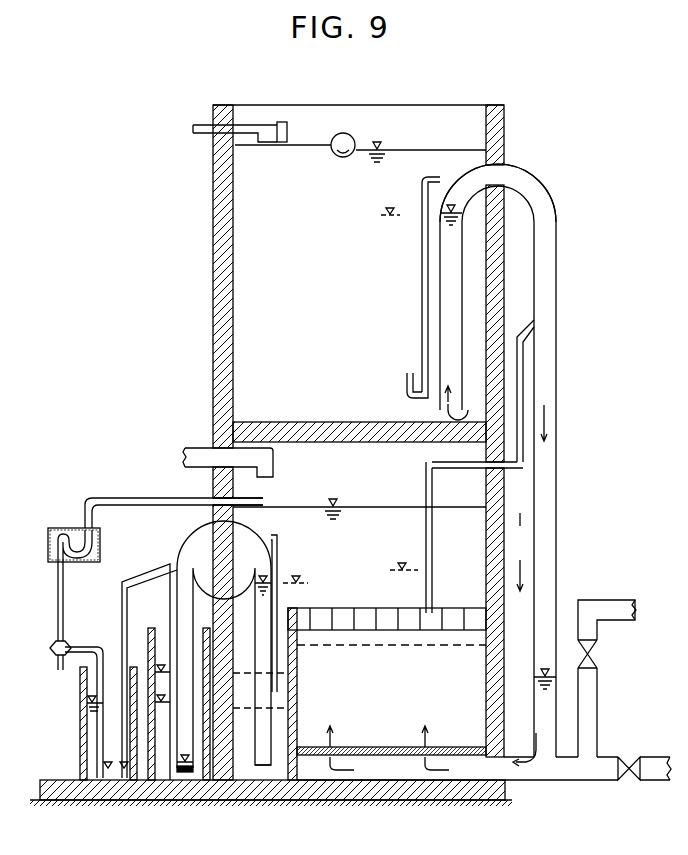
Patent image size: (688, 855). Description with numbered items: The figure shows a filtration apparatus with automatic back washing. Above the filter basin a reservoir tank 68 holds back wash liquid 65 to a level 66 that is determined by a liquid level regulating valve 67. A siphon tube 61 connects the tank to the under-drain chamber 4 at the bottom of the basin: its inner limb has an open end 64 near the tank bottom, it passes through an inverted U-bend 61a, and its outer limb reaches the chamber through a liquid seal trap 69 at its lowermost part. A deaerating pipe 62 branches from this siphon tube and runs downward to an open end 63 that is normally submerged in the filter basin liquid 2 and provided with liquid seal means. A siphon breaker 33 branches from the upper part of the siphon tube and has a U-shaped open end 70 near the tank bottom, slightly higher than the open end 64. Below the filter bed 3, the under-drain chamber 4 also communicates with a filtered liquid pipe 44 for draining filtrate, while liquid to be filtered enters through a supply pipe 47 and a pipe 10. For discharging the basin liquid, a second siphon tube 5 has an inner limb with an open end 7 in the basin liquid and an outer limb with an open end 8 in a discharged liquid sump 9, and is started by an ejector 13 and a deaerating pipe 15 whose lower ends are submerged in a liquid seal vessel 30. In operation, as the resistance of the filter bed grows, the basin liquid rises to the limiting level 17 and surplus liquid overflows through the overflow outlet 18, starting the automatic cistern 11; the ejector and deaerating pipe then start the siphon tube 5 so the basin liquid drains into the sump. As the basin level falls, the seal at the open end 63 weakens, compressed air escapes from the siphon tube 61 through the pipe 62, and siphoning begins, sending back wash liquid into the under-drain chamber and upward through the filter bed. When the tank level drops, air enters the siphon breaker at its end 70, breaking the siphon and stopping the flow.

The filter basin liquid 2 is at (359, 588).
The filter bed 3 is at (396, 706).
The under-drain chamber 4 is at (396, 781).
The siphon tube 5 is at (178, 542).
The open end 7 is at (262, 766).
The open end 8 is at (184, 774).
The discharged liquid sump 9 is at (160, 789).
The feed pipe 10 is at (140, 497).
The automatic cistern 11 is at (48, 541).
The ejector 13 is at (50, 648).
The deaerating pipe 15 is at (121, 612).
The limiting level 17 is at (377, 505).
The overflow outlet 18 is at (236, 498).
The liquid seal vessel 30 is at (80, 771).
The siphon breaker 33 is at (421, 286).
The filtered liquid pipe 44 is at (568, 781).
The supply pipe 47 is at (196, 448).
The siphon tube 61 is at (557, 244).
The inverted U-bend 61a is at (534, 172).
The deaerating pipe 62 is at (524, 364).
The open end 63 is at (432, 608).
The open end 64 is at (440, 414).
The back wash liquid 65 is at (316, 267).
The level 66 is at (432, 149).
The liquid level regulating valve 67 is at (283, 122).
The reservoir tank 68 is at (506, 128).
The liquid seal trap 69 is at (534, 717).
The U-shaped open end 70 is at (407, 372).